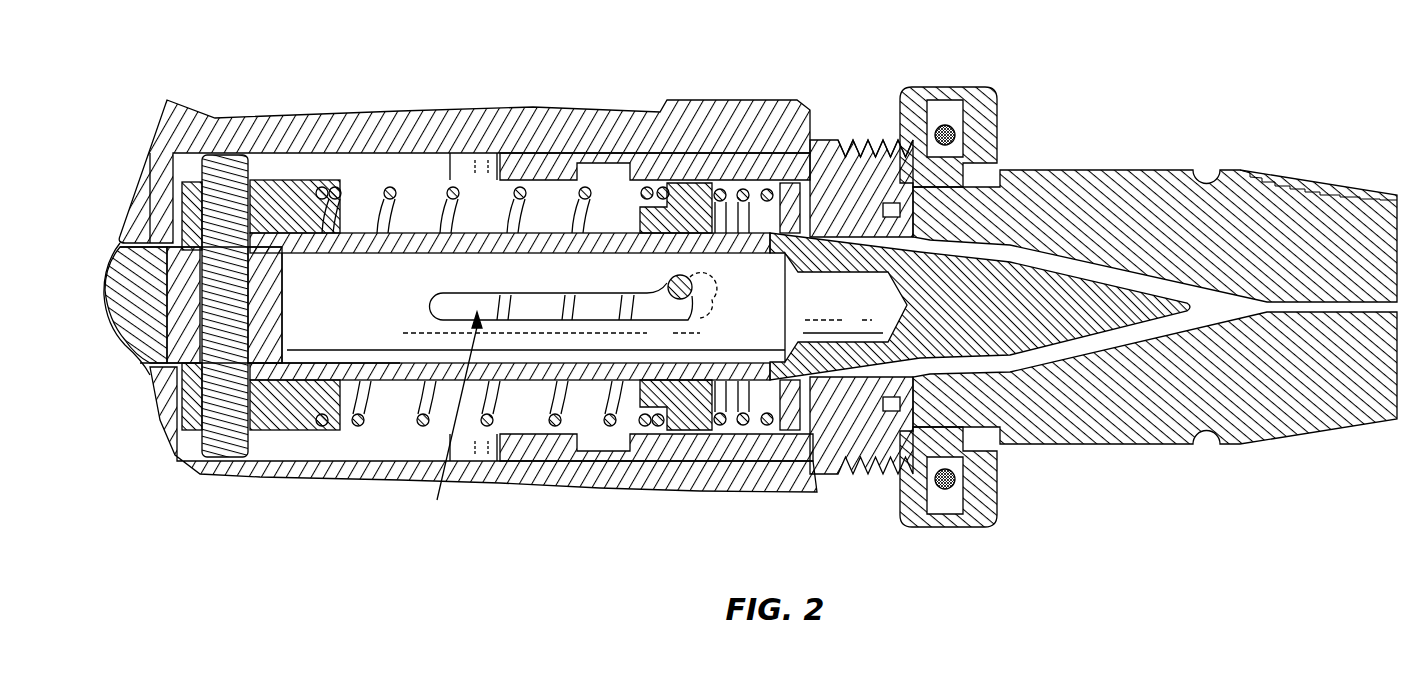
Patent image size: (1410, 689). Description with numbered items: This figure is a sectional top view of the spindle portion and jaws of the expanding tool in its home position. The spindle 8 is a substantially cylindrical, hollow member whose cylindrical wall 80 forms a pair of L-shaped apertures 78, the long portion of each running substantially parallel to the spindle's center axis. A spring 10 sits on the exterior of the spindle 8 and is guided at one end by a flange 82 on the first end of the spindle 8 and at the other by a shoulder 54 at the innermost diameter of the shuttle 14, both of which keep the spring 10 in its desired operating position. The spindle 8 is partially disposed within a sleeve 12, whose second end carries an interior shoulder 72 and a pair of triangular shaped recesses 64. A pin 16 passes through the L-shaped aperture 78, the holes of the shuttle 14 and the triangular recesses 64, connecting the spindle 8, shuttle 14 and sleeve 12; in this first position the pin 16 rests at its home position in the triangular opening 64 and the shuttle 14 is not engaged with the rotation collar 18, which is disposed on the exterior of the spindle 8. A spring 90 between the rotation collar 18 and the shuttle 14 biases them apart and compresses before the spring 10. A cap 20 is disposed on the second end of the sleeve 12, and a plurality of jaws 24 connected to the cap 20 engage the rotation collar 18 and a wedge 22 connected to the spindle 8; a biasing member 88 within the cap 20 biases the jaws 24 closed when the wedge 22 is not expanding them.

The spindle 8 is at (350, 267).
The spring 10 is at (452, 188).
The sleeve 12 is at (524, 454).
The shuttle 14 is at (678, 420).
The pin 16 is at (665, 292).
The rotation collar 18 is at (852, 212).
The cap 20 is at (905, 530).
The wedge 22 is at (1013, 297).
The jaws 24 is at (1130, 418).
The shoulder 54 is at (635, 400).
The triangular shaped recesses 64 is at (738, 190).
The shoulder 72 is at (822, 160).
The L-shaped apertures 78 is at (444, 425).
The cylindrical wall 80 is at (341, 313).
The flange 82 is at (320, 182).
The biasing member 88 is at (947, 128).
The spring 90 is at (750, 420).